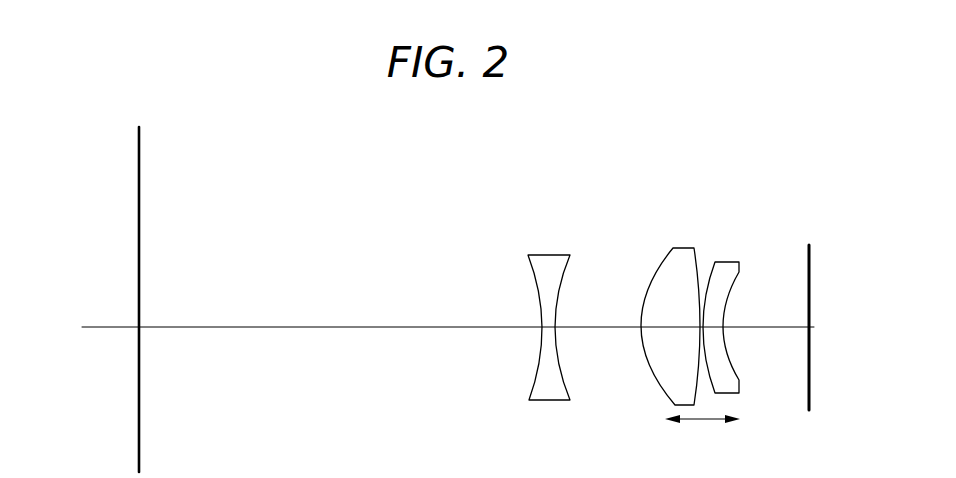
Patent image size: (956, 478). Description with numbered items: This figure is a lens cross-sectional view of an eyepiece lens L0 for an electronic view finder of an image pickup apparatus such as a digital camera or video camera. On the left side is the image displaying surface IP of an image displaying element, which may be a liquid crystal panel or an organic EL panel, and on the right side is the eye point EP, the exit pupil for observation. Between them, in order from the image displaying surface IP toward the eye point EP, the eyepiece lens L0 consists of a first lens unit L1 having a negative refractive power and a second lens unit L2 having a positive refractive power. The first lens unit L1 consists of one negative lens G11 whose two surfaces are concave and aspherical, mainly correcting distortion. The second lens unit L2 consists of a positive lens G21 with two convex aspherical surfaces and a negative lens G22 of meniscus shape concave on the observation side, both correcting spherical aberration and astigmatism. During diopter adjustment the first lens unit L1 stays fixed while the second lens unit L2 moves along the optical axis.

The image displaying surface IP is at (139, 285).
The eye point EP is at (809, 313).
The eyepiece lens L0 is at (521, 147).
The first lens unit L1 is at (578, 193).
The second lens unit L2 is at (635, 193).
The negative lens G11 is at (549, 295).
The positive lens G21 is at (682, 258).
The negative lens G22 is at (728, 270).